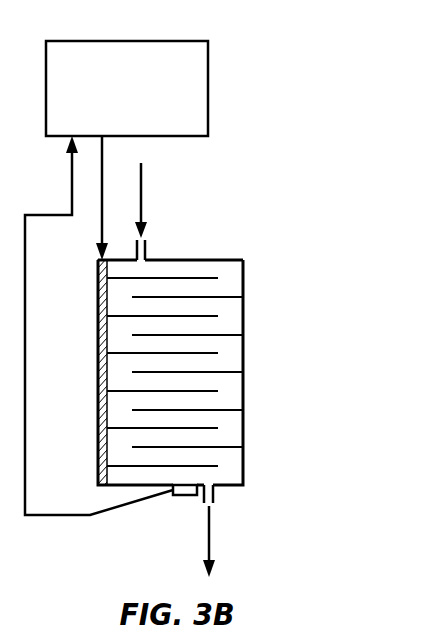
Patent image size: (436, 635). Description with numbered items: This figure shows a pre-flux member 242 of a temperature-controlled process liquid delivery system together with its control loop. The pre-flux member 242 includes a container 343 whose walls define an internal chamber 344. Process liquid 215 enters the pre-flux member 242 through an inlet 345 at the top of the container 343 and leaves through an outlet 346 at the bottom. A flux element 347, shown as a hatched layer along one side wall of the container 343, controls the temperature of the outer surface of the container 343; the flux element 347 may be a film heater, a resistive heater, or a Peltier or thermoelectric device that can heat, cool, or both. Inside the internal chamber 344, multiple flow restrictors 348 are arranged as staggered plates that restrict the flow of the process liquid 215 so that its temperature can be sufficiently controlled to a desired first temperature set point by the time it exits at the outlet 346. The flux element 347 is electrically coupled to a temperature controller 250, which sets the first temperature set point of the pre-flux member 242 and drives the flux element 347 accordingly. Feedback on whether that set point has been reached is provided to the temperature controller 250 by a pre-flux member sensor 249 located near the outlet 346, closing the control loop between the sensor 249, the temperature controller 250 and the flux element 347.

The temperature controller 250 is at (133, 41).
The pre-flux member 242 is at (189, 356).
The container 343 is at (201, 259).
The inlet 345 is at (147, 247).
The flux element 347 is at (98, 310).
The internal chamber 344 is at (115, 372).
The process liquid 215 is at (230, 283).
The flow restrictors 348 is at (197, 355).
The pre-flux member sensor 249 is at (185, 497).
The outlet 346 is at (215, 493).